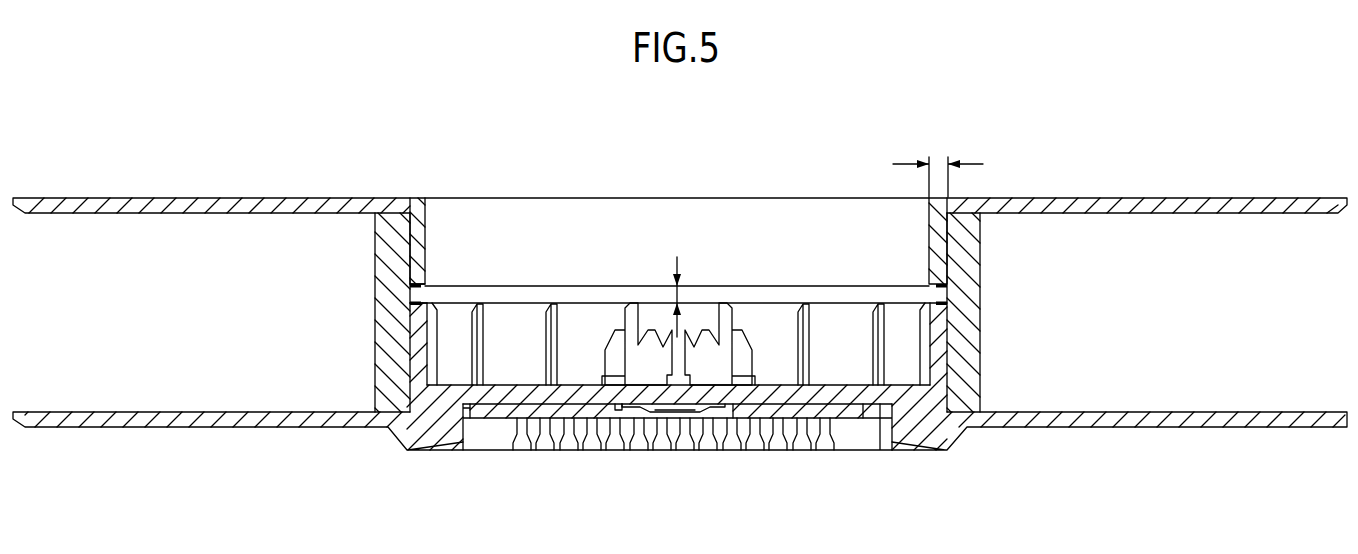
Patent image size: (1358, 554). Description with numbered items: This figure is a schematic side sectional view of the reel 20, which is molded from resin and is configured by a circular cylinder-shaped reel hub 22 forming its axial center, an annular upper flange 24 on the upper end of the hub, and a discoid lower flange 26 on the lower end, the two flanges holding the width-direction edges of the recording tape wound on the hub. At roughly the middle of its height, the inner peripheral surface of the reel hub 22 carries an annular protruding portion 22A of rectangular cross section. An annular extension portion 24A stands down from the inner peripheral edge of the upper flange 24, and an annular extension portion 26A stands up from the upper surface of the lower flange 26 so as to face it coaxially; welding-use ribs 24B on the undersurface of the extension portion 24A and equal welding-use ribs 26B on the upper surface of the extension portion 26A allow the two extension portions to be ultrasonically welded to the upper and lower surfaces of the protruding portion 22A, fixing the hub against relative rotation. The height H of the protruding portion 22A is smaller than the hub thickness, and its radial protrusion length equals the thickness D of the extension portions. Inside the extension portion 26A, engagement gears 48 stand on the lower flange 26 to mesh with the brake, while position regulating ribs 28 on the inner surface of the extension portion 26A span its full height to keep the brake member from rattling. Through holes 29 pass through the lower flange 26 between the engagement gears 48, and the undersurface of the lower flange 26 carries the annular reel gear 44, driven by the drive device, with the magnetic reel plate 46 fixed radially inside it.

The reel 20 is at (1090, 130).
The reel hub 22 is at (980, 312).
The protruding portion 22A is at (418, 294).
The upper flange 24 is at (1212, 202).
The annular extension portion 24A is at (420, 244).
The welding-use ribs 24B is at (415, 282).
The lower flange 26 is at (1212, 420).
The annular extension portion 26A is at (418, 347).
The welding-use ribs 26B is at (418, 309).
The position regulating ribs 28 is at (553, 343).
The through holes 29 is at (492, 392).
The reel gear 44 is at (680, 452).
The reel plate 46 is at (500, 414).
The engagement gears 48 is at (648, 358).
The thickness of the extension portions D is at (940, 158).
The height of the protruding portion H is at (680, 292).